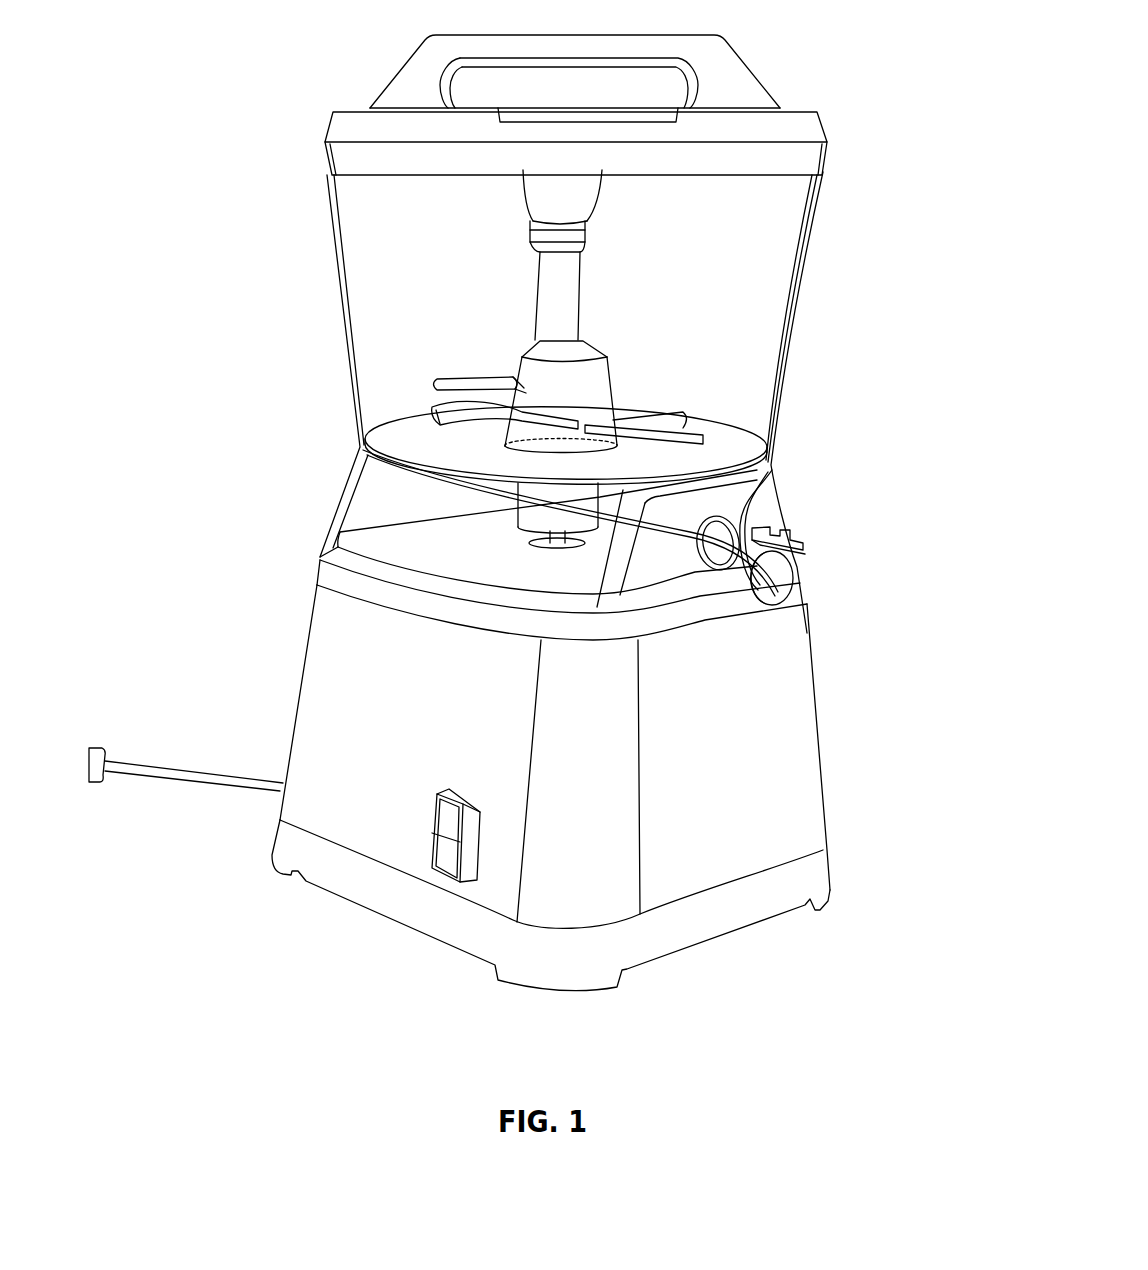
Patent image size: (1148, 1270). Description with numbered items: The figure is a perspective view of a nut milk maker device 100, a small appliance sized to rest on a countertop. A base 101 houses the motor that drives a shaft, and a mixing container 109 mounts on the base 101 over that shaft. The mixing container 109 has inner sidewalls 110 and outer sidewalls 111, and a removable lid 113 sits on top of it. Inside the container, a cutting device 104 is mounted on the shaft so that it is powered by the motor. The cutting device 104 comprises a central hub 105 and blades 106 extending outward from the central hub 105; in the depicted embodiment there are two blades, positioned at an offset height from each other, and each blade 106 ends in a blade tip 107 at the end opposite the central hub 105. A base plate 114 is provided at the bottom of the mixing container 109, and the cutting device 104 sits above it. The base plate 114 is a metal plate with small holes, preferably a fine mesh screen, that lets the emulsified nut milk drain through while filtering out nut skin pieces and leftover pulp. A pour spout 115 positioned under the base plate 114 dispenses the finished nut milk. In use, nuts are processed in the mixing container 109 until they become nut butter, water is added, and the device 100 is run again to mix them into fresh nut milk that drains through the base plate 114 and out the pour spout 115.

The nut milk maker device 100 is at (208, 43).
The base 101 is at (764, 787).
The cutting device 104 is at (668, 393).
The central hub 105 is at (592, 355).
The blade 106 is at (485, 377).
The blade tip 107 is at (513, 393).
The mixing container 109 is at (425, 302).
The inner sidewalls 110 is at (798, 282).
The outer sidewalls 111 is at (812, 243).
The removable lid 113 is at (822, 122).
The base plate 114 is at (745, 455).
The pour spout 115 is at (770, 592).